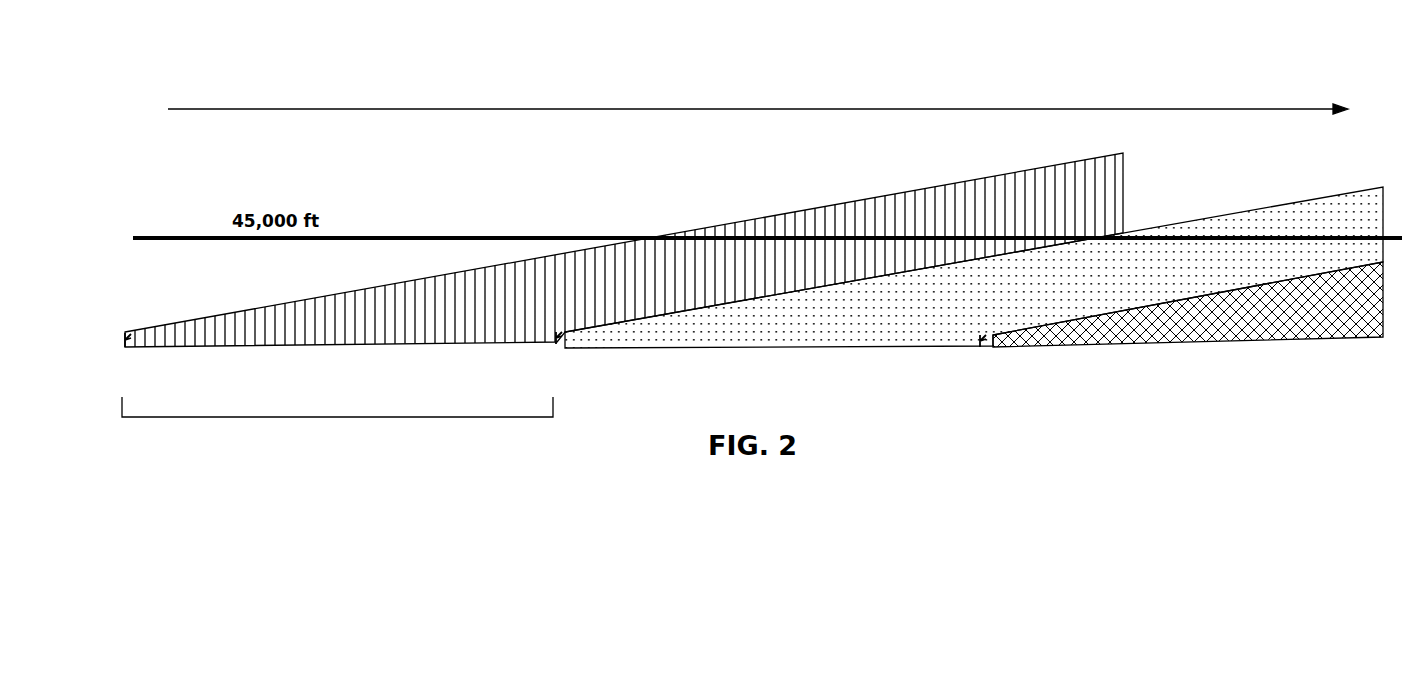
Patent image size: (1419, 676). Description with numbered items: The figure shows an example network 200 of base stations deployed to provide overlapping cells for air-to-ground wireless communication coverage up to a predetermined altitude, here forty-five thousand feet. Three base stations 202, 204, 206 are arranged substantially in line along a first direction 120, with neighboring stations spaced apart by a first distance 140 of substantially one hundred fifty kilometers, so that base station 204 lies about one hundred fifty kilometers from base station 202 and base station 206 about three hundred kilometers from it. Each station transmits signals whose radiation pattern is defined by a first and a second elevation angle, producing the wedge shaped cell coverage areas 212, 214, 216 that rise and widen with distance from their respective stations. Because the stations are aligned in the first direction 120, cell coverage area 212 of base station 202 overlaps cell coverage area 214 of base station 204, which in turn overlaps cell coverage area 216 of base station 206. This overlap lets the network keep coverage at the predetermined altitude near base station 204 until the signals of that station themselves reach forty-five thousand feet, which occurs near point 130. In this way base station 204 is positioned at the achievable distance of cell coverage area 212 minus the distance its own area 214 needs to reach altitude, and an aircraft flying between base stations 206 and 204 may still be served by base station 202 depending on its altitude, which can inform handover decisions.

The network 200 is at (1252, 59).
The first direction 120 is at (736, 109).
The point 130 is at (1106, 236).
The first distance 140 is at (330, 417).
The base station 202 is at (127, 348).
The base station 204 is at (557, 346).
The base station 206 is at (981, 347).
The cell coverage area 212 is at (318, 298).
The cell coverage area 214 is at (1340, 193).
The cell coverage area 216 is at (1142, 343).